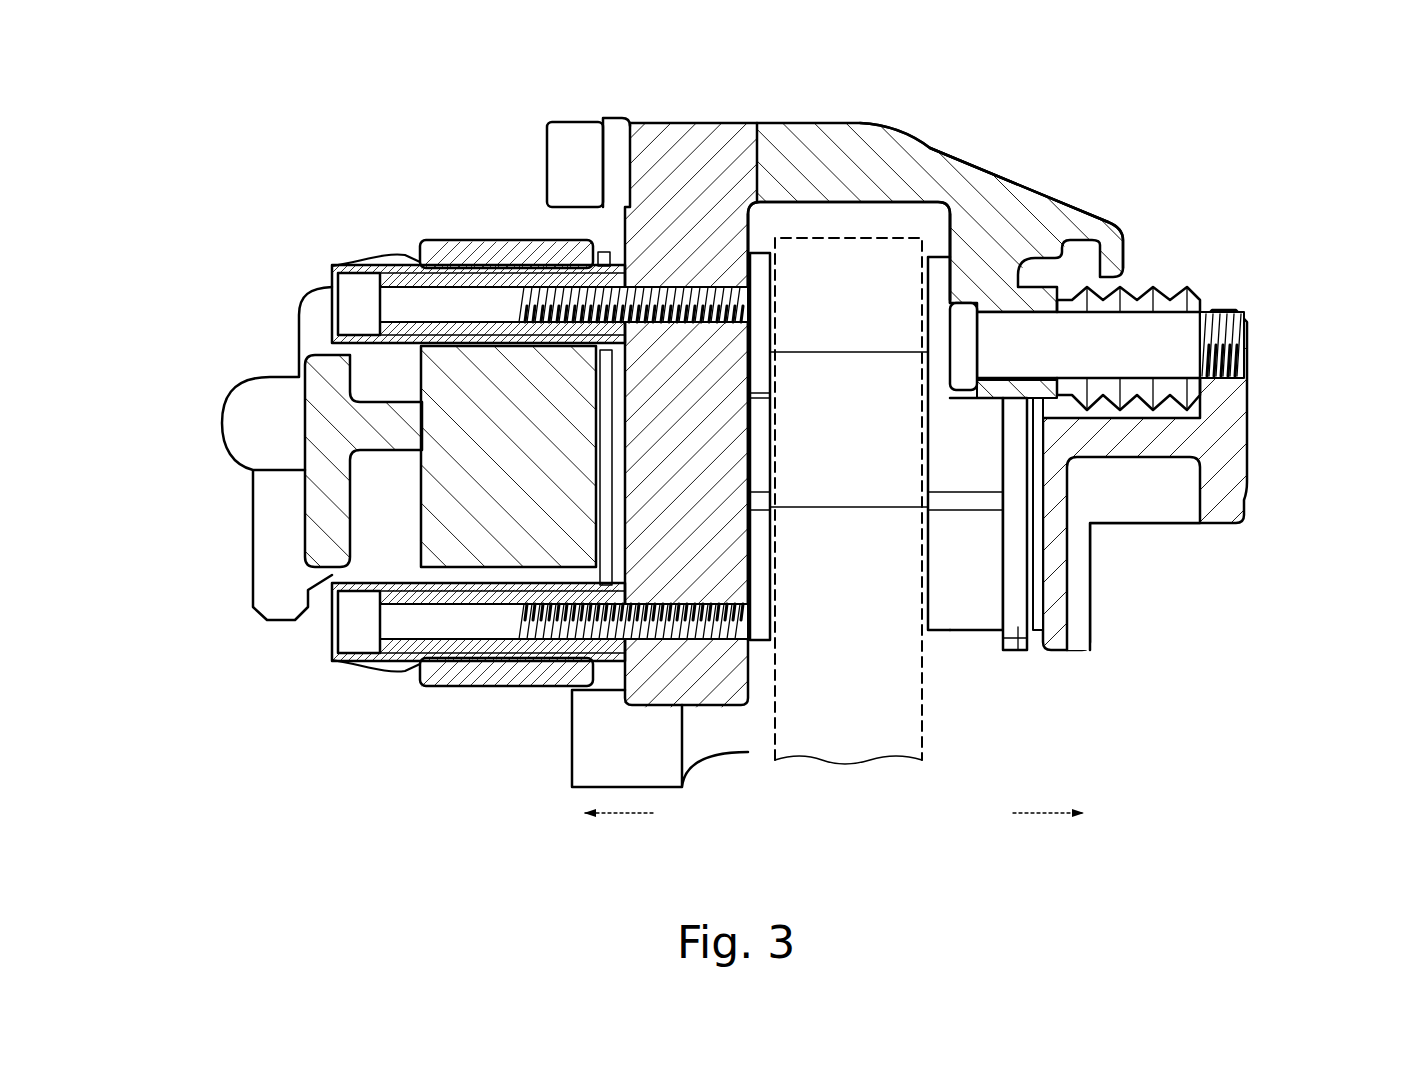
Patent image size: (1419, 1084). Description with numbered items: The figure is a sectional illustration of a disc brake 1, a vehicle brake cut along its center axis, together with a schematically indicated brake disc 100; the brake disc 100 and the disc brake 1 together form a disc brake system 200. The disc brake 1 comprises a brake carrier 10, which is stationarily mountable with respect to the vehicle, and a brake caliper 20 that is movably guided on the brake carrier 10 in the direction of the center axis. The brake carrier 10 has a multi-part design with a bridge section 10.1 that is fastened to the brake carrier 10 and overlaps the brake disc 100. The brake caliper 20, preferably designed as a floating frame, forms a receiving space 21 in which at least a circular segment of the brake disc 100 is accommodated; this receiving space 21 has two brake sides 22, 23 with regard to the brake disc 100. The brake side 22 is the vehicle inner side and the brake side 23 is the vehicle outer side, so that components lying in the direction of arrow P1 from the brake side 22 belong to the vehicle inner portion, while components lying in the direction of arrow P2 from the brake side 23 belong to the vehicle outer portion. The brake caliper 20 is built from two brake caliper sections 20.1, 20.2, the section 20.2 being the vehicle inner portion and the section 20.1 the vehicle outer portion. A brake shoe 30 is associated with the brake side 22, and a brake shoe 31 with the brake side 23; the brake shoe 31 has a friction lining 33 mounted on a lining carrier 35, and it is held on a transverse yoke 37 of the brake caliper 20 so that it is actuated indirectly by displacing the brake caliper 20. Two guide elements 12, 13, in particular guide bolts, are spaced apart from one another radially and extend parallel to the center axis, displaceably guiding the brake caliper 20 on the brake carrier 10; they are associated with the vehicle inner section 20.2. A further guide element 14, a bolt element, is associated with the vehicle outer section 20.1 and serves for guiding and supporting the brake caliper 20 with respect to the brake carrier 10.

The disc brake 1 is at (505, 222).
The brake carrier 10 is at (685, 157).
The bridge section 10.1 is at (815, 160).
The guide element 12 is at (397, 295).
The guide element 13 is at (412, 630).
The further guide element 14 is at (1152, 327).
The brake caliper 20 is at (756, 462).
The brake caliper section 20.1 is at (1231, 480).
The brake caliper section 20.2 is at (317, 493).
The receiving space 21 is at (840, 217).
The brake side 22 is at (756, 238).
The brake side 23 is at (930, 238).
The brake shoe 30 is at (773, 559).
The brake shoe 31 is at (928, 572).
The friction lining 33 is at (948, 620).
The lining carrier 35 is at (1018, 630).
The transverse yoke 37 is at (1060, 563).
The brake disc 100 is at (837, 747).
The disc brake system 200 is at (1100, 197).
The arrow P1 is at (622, 815).
The arrow P2 is at (1040, 815).